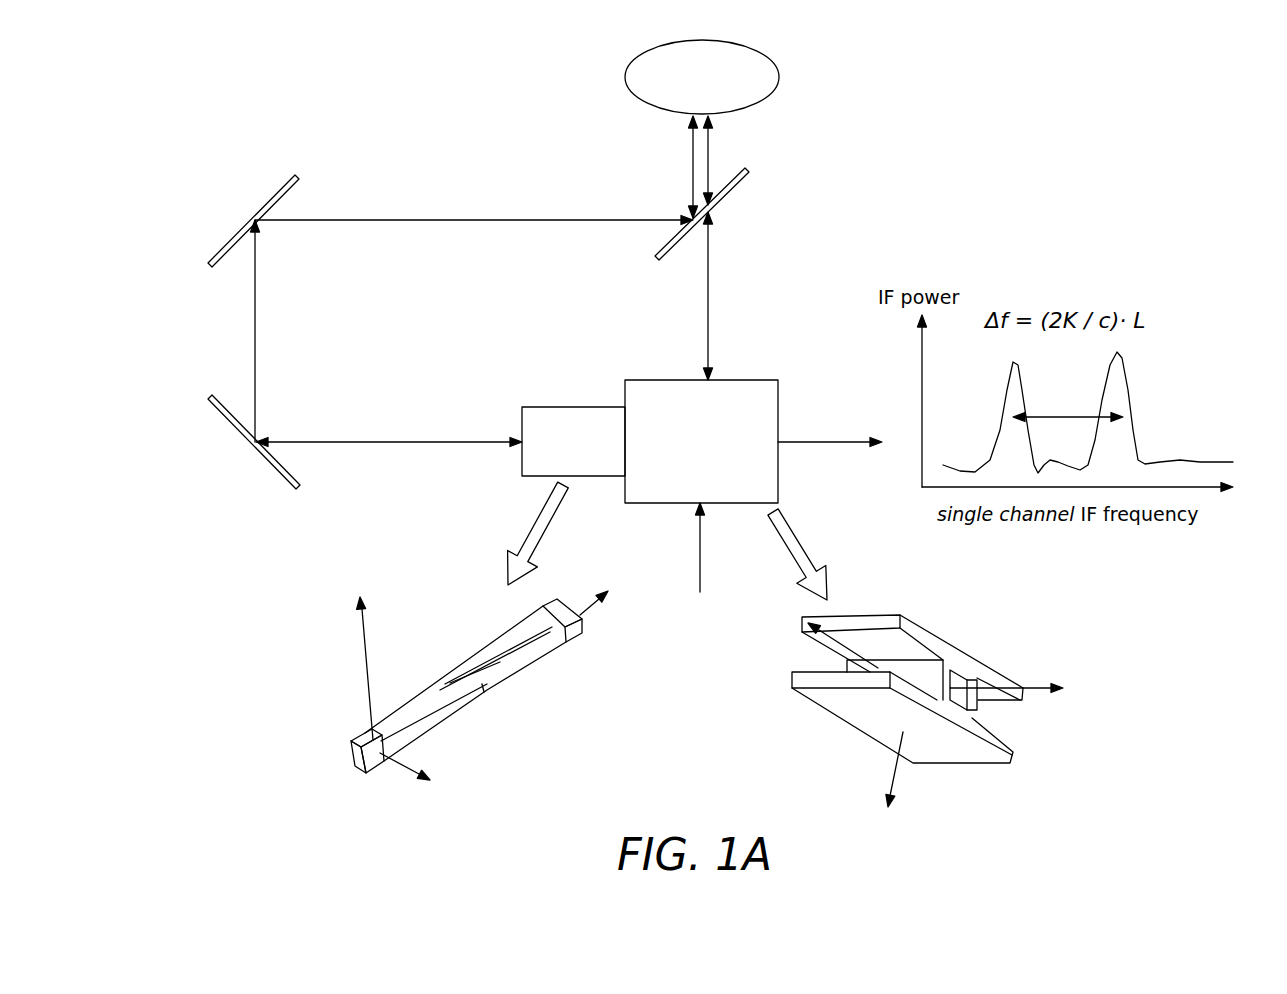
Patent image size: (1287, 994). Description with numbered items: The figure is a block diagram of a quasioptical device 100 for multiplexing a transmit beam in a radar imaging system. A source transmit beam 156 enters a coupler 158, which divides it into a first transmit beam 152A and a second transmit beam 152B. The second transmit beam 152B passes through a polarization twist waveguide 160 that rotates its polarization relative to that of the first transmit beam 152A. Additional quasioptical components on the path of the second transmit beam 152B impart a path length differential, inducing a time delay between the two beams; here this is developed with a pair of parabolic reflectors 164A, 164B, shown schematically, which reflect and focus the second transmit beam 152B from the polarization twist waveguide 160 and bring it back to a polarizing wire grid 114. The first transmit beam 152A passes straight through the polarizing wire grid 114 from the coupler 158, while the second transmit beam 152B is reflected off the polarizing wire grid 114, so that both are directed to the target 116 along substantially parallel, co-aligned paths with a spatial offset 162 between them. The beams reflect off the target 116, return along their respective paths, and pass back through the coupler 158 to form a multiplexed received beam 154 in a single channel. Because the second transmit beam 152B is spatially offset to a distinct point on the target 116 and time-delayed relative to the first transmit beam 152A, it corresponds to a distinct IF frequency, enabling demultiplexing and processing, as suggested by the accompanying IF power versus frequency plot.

The quasioptical device 100 is at (846, 190).
The polarizing wire grid 114 is at (748, 170).
The target 116 is at (647, 50).
The first transmit beam 152A is at (708, 311).
The second transmit beam 152B is at (472, 440).
The multiplexed received beam 154 is at (791, 440).
The source transmit beam 156 is at (700, 564).
The coupler 158 is at (653, 380).
The polarization twist waveguide 160 is at (574, 407).
The spatial offset 162 is at (700, 165).
The parabolic reflector 164A is at (233, 417).
The parabolic reflector 164B is at (253, 219).